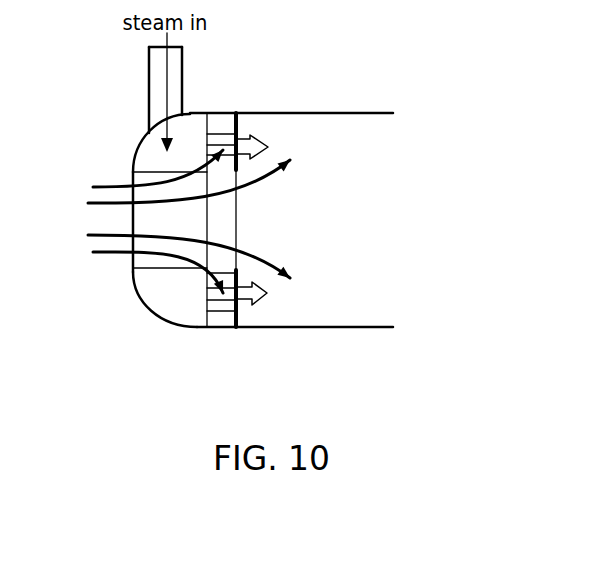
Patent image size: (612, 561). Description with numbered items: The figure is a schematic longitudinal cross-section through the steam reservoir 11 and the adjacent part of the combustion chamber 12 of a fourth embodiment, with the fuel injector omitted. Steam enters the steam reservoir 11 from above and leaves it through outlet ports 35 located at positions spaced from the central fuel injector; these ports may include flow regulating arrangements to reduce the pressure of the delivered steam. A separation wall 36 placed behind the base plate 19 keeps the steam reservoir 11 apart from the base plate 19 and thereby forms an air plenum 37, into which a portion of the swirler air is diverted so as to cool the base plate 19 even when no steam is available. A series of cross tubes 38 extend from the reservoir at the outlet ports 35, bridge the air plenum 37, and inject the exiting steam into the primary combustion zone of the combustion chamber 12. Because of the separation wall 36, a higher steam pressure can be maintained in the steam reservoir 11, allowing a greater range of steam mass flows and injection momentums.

The steam reservoir 11 is at (152, 155).
The combustion chamber 12 is at (362, 135).
The base plate 19 is at (238, 271).
The outlet ports 35 is at (205, 145).
The separation wall 36 is at (205, 317).
The air plenum 37 is at (236, 114).
The cross tubes 38 is at (213, 135).